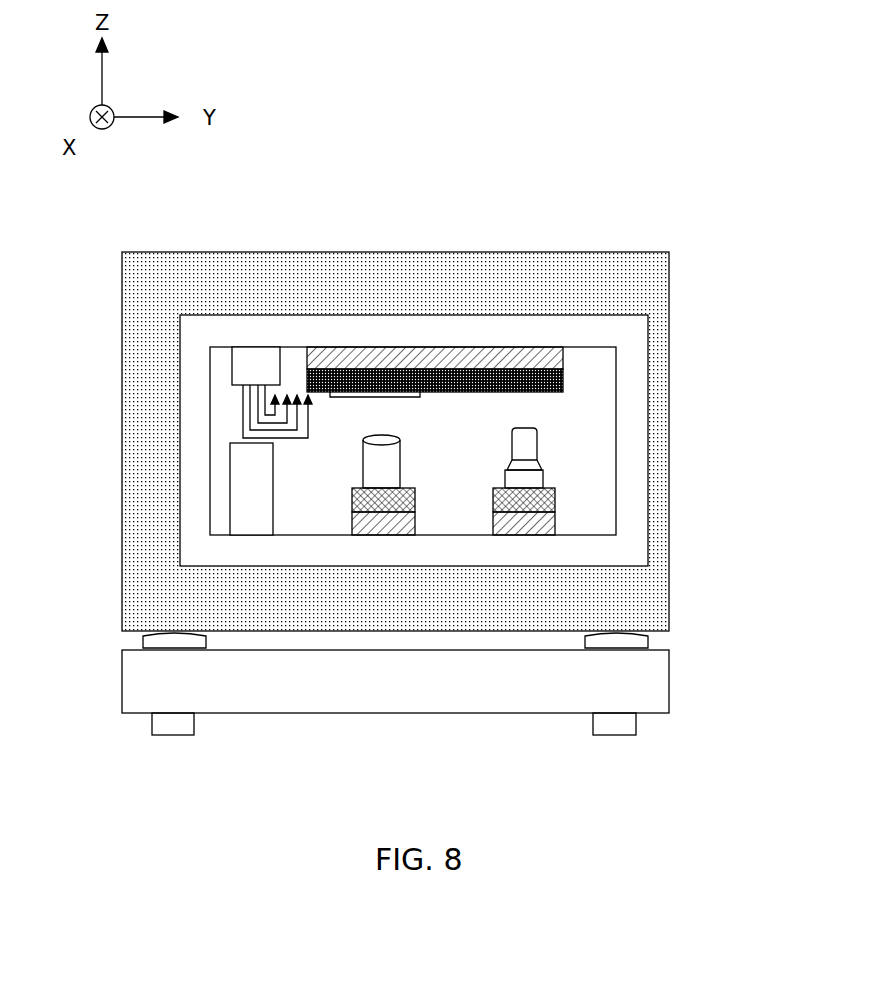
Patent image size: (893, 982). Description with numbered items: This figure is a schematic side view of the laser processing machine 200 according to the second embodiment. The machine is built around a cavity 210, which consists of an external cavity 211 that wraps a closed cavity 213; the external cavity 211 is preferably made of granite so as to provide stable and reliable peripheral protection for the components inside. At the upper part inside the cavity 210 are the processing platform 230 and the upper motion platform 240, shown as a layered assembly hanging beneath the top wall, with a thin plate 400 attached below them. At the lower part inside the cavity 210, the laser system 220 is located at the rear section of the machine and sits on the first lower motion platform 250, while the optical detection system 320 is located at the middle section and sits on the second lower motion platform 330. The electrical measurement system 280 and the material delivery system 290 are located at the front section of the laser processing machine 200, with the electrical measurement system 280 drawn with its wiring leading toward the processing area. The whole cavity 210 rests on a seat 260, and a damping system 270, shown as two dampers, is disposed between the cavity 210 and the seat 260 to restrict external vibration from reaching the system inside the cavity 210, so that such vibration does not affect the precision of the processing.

The laser processing machine 200 is at (160, 222).
The cavity 210 is at (703, 147).
The external cavity 211 is at (558, 270).
The closed cavity 213 is at (587, 335).
The laser system 220 is at (540, 440).
The processing platform 230 is at (300, 378).
The upper motion platform 240 is at (306, 356).
The first lower motion platform 250 is at (555, 500).
The seat 260 is at (122, 683).
The damping system 270 is at (140, 645).
The electrical measurement system 280 is at (232, 365).
The material delivery system 290 is at (230, 485).
The optical detection system 320 is at (363, 462).
The second lower motion platform 330 is at (415, 500).
The plate 400 is at (420, 397).